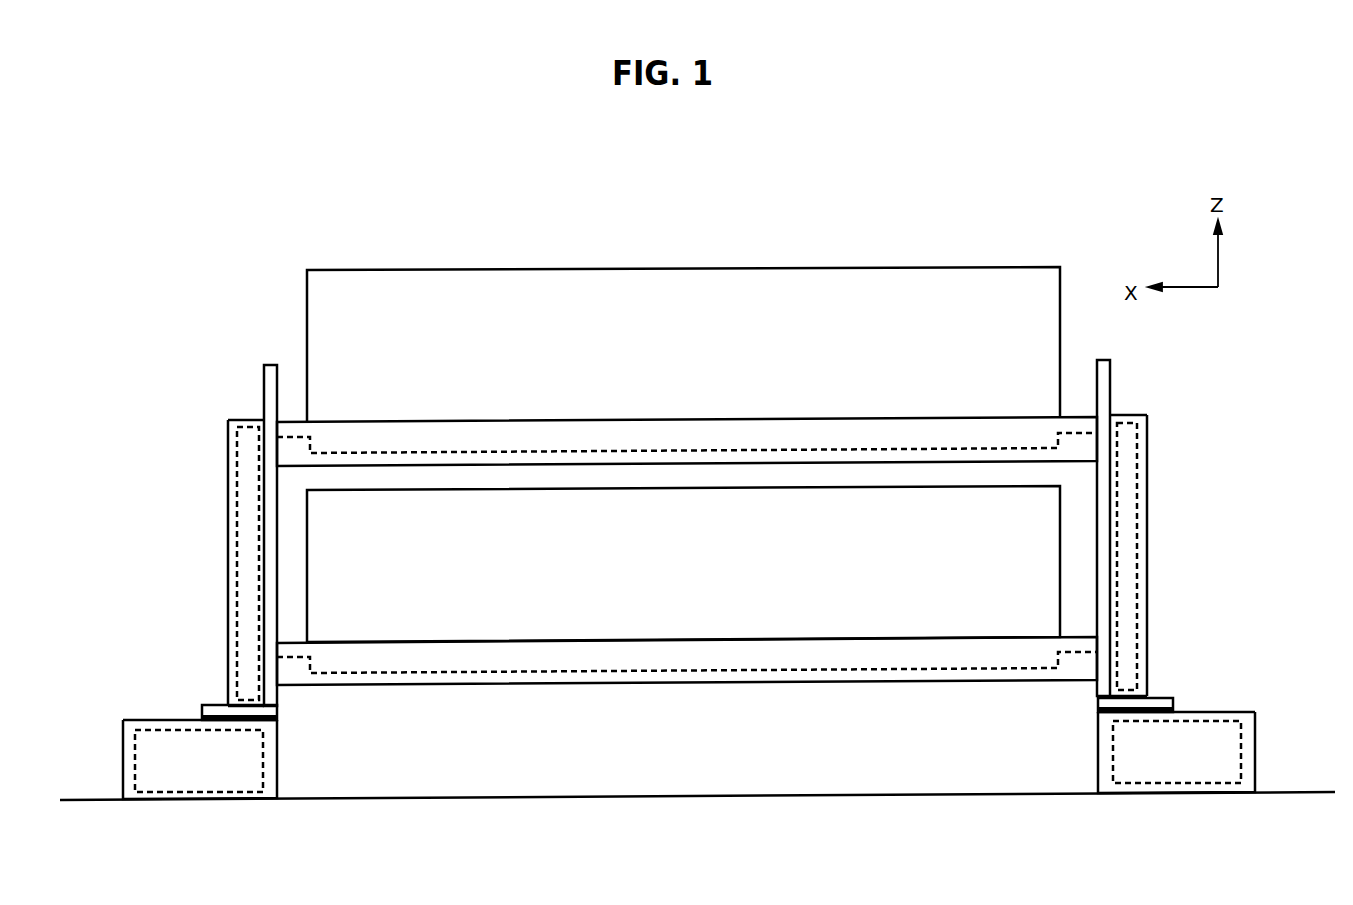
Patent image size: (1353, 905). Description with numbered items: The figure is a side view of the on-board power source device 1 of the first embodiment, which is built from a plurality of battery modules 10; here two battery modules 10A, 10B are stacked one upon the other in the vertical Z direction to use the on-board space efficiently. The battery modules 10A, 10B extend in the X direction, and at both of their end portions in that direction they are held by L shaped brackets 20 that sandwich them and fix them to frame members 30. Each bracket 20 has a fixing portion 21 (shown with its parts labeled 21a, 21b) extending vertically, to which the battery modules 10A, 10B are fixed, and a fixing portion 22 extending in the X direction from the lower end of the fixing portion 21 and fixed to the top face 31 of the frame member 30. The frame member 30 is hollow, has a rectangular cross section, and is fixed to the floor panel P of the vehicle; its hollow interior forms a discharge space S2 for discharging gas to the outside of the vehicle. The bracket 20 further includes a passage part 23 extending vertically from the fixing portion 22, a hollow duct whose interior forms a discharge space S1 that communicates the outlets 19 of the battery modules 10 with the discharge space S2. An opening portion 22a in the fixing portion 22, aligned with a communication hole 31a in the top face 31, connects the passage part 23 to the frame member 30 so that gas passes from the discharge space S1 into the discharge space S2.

The on-board power source device 1 is at (258, 232).
The battery modules 10 is at (589, 454).
The battery module 10A is at (300, 293).
The battery module 10B is at (300, 522).
The outlets 19 is at (278, 444).
The L shaped brackets 20 is at (255, 383).
The fixing portion 21 is at (691, 560).
The upper portion of frame member 21a is at (270, 440).
The lower portion of frame member 21b is at (267, 665).
The passage part 23 is at (230, 580).
The discharge space S1 is at (250, 537).
The fixing portion 22 is at (687, 691).
The opening portion 22a is at (247, 707).
The frame members 30 is at (692, 747).
The top face 31 is at (692, 747).
The communication hole 31a is at (258, 730).
The discharge space S2 is at (192, 773).
The floor panel P is at (83, 797).